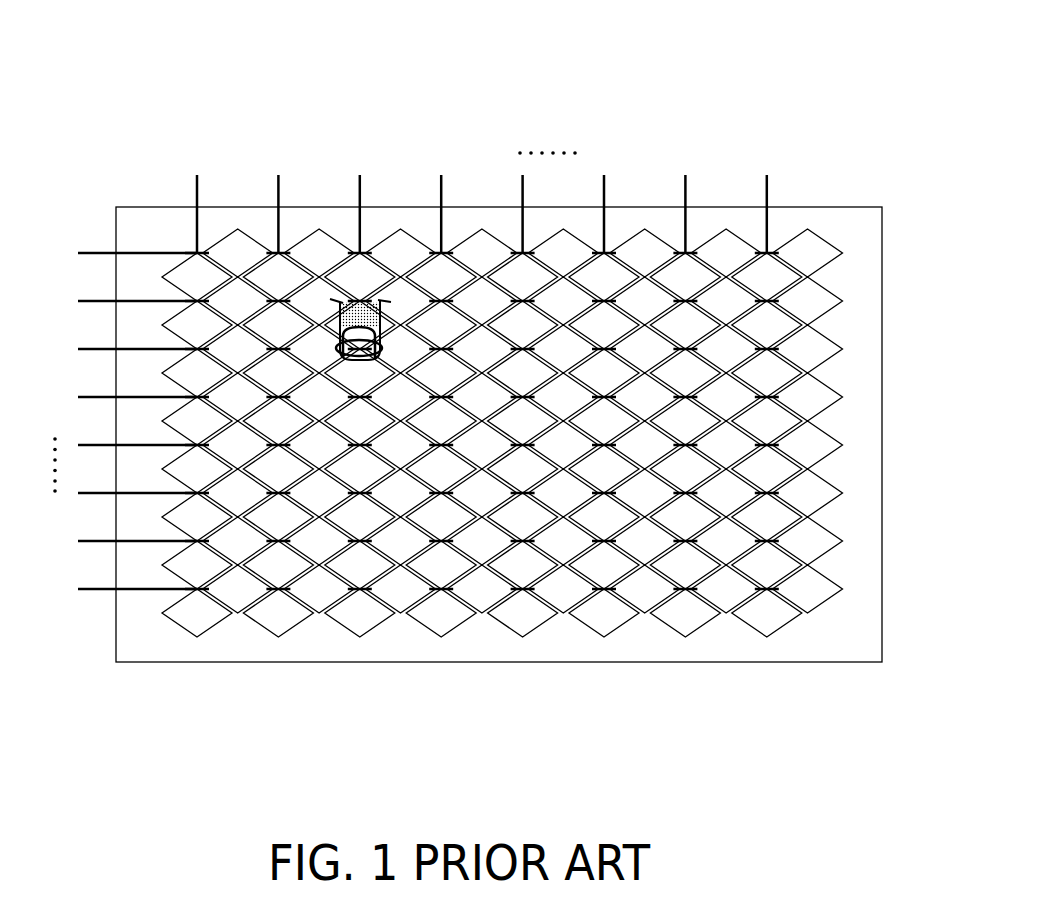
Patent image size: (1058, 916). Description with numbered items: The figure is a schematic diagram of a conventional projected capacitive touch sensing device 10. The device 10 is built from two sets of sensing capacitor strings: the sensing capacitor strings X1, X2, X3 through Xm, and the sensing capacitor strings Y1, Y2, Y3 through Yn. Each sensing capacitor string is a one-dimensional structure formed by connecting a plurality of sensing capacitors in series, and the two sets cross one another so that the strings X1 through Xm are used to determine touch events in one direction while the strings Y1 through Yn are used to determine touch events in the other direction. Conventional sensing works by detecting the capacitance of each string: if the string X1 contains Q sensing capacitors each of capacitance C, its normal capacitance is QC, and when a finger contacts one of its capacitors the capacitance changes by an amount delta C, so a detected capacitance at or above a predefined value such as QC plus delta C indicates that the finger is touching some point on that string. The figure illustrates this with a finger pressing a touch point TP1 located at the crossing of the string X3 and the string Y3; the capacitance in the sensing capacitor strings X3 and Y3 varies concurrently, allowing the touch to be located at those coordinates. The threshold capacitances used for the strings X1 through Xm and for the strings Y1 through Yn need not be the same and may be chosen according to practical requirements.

The projected capacitive touch sensing device 10 is at (782, 108).
The touch point TP1 is at (408, 337).
The sensing capacitor string X1 is at (197, 390).
The sensing capacitor string X2 is at (278, 390).
The sensing capacitor string X3 is at (360, 390).
The sensing capacitor string Xm is at (767, 390).
The sensing capacitor string Y1 is at (442, 253).
The sensing capacitor string Y2 is at (442, 301).
The sensing capacitor string Y3 is at (442, 349).
The sensing capacitor string Yn is at (442, 589).